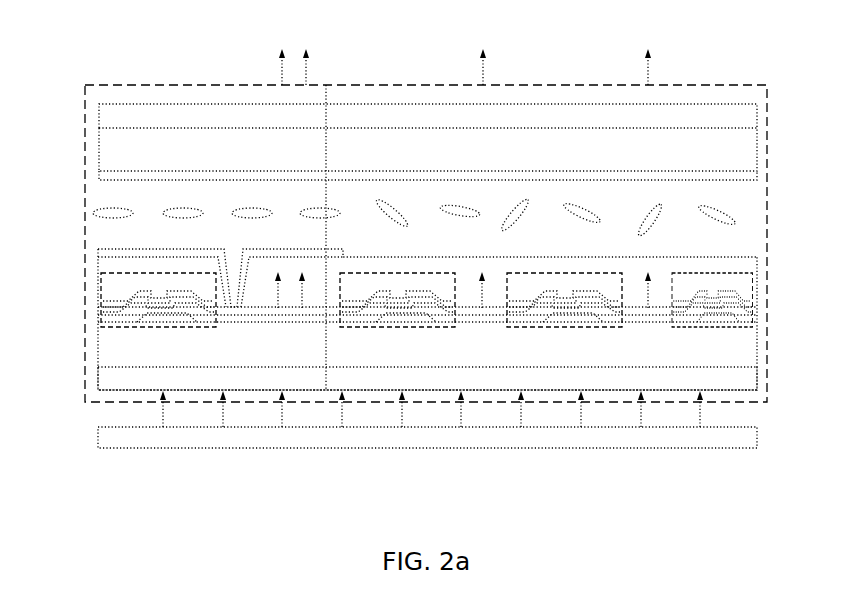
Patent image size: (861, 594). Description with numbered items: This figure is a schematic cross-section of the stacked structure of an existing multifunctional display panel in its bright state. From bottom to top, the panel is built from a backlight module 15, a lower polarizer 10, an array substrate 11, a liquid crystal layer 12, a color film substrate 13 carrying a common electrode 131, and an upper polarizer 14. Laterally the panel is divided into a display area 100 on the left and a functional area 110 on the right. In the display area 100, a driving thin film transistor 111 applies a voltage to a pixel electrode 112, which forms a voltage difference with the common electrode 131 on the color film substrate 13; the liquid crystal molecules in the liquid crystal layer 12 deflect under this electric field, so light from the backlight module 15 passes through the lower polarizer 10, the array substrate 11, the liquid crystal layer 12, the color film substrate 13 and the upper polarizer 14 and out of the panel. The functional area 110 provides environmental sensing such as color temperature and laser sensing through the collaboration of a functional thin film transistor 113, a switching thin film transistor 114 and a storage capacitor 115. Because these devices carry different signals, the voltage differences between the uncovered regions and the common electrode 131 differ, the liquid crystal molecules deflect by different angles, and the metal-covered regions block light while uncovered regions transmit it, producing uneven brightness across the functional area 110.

The display area 100 is at (143, 85).
The functional area 110 is at (367, 85).
The upper polarizer 14 is at (745, 118).
The color film substrate 13 is at (747, 147).
The common electrode 131 is at (747, 178).
The liquid crystal layer 12 is at (735, 213).
The storage capacitor 115 is at (742, 273).
The pixel electrode 112 is at (112, 249).
The driving thin film transistor 111 is at (100, 290).
The functional thin film transistor 113 is at (397, 327).
The switching thin film transistor 114 is at (547, 327).
The array substrate 11 is at (745, 340).
The lower polarizer 10 is at (745, 380).
The backlight module 15 is at (745, 435).